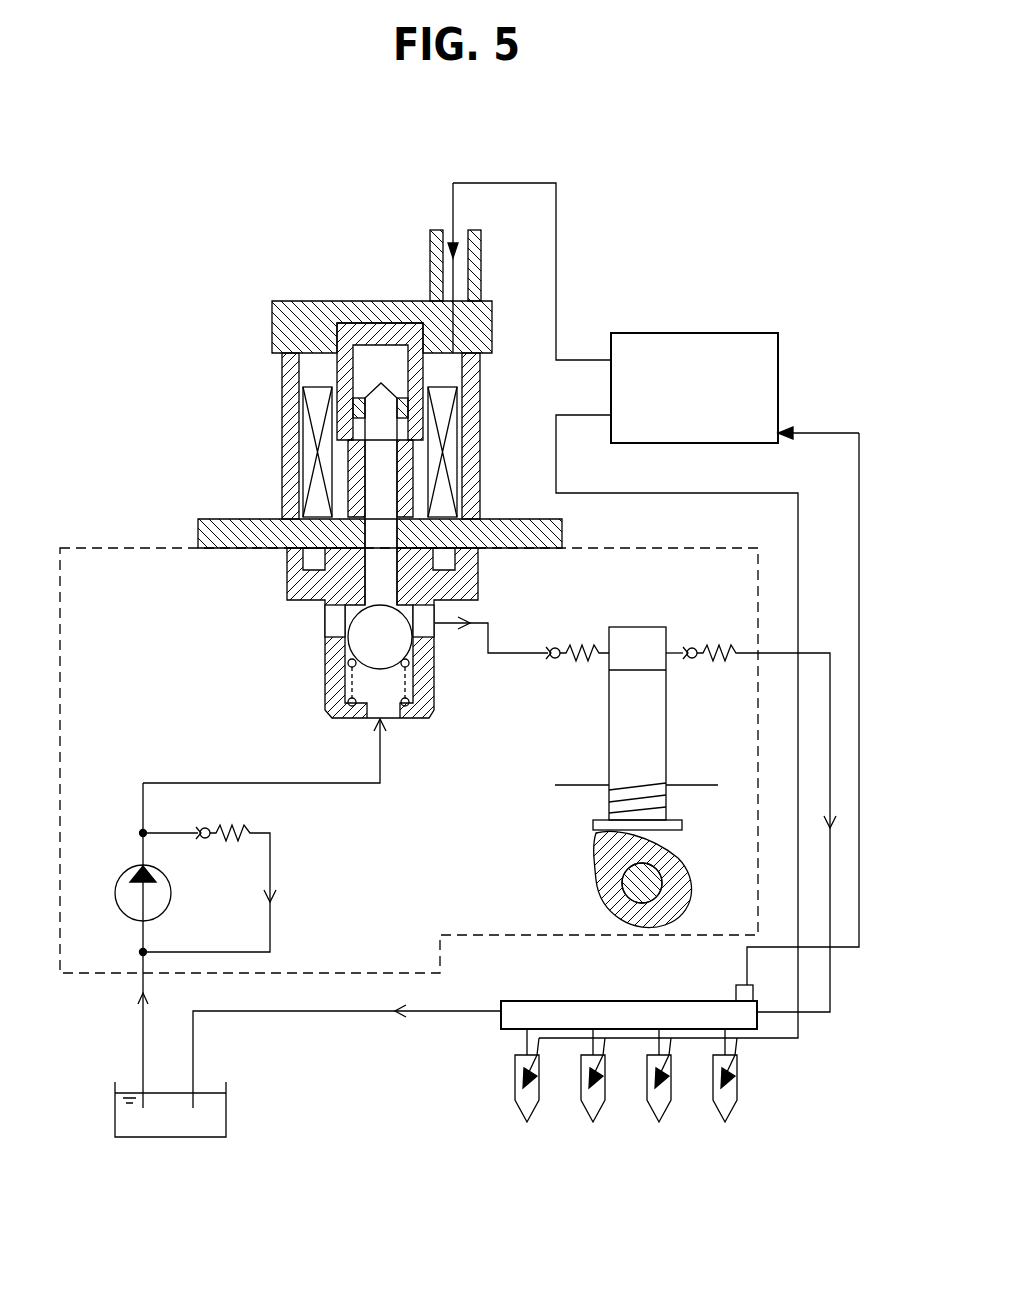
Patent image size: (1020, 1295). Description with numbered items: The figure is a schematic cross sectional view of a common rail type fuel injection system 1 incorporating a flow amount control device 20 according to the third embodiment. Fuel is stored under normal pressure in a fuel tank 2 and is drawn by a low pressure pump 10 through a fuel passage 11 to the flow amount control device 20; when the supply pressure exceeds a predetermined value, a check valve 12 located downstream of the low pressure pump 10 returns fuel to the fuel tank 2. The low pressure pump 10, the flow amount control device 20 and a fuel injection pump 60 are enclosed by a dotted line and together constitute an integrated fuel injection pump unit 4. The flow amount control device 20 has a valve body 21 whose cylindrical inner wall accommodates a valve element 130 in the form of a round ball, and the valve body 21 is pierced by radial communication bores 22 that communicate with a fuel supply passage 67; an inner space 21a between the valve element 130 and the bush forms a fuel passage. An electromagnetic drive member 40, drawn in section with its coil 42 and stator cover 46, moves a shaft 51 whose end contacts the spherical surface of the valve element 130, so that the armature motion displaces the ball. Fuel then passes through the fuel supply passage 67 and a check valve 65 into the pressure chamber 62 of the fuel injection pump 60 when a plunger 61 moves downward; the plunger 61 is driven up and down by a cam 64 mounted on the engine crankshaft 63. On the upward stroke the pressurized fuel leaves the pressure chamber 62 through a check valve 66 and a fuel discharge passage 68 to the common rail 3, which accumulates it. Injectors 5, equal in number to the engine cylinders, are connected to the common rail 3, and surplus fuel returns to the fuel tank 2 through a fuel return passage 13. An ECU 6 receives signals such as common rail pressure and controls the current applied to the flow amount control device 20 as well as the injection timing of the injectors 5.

The common rail type fuel injection system 1 is at (168, 200).
The fuel tank 2 is at (115, 1117).
The common rail 3 is at (500, 1026).
The integrated fuel injection pump unit 4 is at (120, 548).
The injectors 5 is at (520, 1110).
The ECU 6 is at (778, 375).
The low pressure pump 10 is at (115, 893).
The fuel passage 11 is at (370, 786).
The check valve 12 is at (220, 840).
The fuel return passage 13 is at (330, 1013).
The flow amount control device 20 is at (350, 445).
The valve body 21 is at (314, 653).
The inner space 21a is at (380, 697).
The communication bores 22 is at (330, 620).
The electromagnetic drive member 40 is at (285, 430).
The coil 42 is at (310, 425).
The stator cover 46 is at (438, 545).
The shaft 51 is at (378, 388).
The fuel injection pump 60 is at (635, 783).
The plunger 61 is at (628, 695).
The pressure chamber 62 is at (630, 640).
The crankshaft 63 is at (618, 895).
The cam 64 is at (595, 850).
The check valve 65 is at (566, 660).
The check valve 66 is at (714, 660).
The fuel supply passage 67 is at (493, 657).
The fuel discharge passage 68 is at (830, 855).
The valve element 130 is at (372, 640).